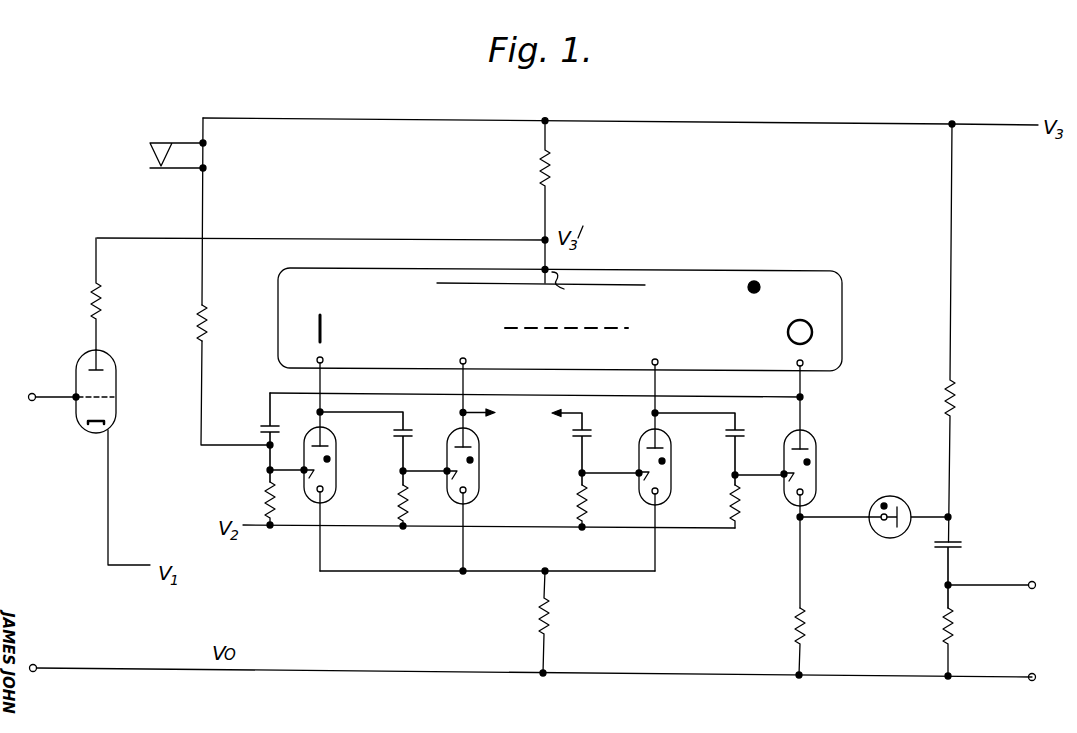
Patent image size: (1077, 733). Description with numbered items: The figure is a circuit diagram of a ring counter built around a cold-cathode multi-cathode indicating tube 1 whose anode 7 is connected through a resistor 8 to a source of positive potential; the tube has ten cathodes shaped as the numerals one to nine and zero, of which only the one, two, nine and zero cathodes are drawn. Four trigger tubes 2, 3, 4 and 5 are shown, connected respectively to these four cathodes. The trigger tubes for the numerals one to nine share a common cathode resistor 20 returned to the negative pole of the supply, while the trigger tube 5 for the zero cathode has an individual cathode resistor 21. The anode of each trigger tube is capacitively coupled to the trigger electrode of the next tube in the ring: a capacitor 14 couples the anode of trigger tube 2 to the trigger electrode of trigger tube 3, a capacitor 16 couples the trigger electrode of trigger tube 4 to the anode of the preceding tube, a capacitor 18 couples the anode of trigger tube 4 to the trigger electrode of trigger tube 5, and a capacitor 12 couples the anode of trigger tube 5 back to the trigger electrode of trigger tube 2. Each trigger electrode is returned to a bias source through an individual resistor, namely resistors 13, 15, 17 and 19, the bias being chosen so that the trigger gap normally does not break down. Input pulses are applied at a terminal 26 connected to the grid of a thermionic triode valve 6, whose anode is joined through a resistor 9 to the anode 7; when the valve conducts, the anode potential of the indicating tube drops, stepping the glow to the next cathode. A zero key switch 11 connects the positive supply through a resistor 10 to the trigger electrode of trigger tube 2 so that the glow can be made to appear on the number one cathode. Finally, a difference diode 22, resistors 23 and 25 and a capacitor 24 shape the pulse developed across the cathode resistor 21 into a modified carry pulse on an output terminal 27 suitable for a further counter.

The cold-cathode multi-cathode indicating tube 1 is at (560, 307).
The trigger tube 2 is at (328, 467).
The trigger tube 3 is at (471, 469).
The trigger tube 4 is at (664, 468).
The trigger tube 5 is at (809, 487).
The thermionic triode valve 6 is at (113, 457).
The anode 7 is at (541, 291).
The resistor 8 is at (554, 202).
The resistor 9 is at (81, 294).
The resistor 10 is at (217, 325).
The zero key switch 11 is at (195, 155).
The capacitor 12 is at (281, 437).
The resistor 13 is at (286, 496).
The capacitor 14 is at (377, 445).
The resistor 15 is at (424, 497).
The capacitor 16 is at (586, 448).
The resistor 17 is at (609, 498).
The capacitor 18 is at (713, 449).
The resistor 19 is at (758, 499).
The common cathode resistor 20 is at (560, 622).
The individual cathode resistor 21 is at (817, 641).
The difference diode 22 is at (875, 509).
The resistor 23 is at (967, 333).
The capacitor 24 is at (962, 570).
The resistor 25 is at (965, 642).
The terminal 26 is at (49, 387).
The output terminal 27 is at (995, 600).